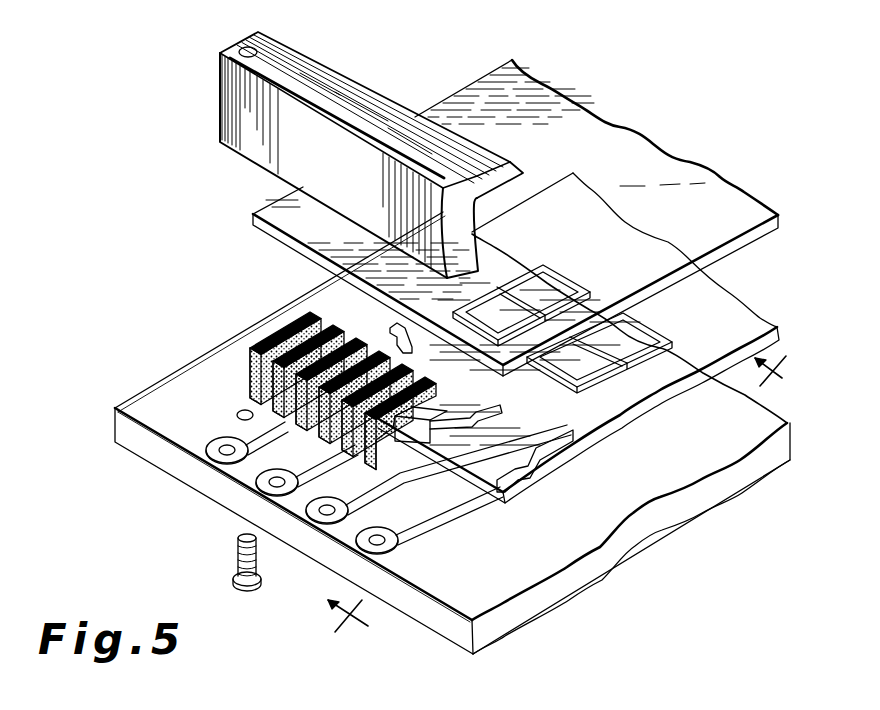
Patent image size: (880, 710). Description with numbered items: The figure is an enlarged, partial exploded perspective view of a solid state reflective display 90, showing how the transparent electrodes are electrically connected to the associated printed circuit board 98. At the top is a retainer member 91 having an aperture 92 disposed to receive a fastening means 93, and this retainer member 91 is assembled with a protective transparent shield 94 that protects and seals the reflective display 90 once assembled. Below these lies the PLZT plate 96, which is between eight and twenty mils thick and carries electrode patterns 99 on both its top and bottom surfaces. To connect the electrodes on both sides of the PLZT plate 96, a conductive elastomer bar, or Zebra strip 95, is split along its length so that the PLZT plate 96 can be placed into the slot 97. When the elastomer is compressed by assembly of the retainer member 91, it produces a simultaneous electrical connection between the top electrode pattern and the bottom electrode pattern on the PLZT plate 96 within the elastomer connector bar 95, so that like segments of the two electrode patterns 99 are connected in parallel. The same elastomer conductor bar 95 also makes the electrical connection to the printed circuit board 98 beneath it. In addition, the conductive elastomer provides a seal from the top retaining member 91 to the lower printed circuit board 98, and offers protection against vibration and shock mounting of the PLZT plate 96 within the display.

The solid state reflective display 90 is at (136, 36).
The retainer member 91 is at (226, 98).
The aperture 92 is at (246, 47).
The fastening means 93 is at (250, 585).
The protective transparent shield 94 is at (606, 138).
The conductive elastomer bar 95 is at (292, 342).
The PLZT plate 96 is at (745, 310).
The slot 97 is at (422, 430).
The printed circuit board 98 is at (684, 477).
The electrode patterns 99 is at (650, 330).